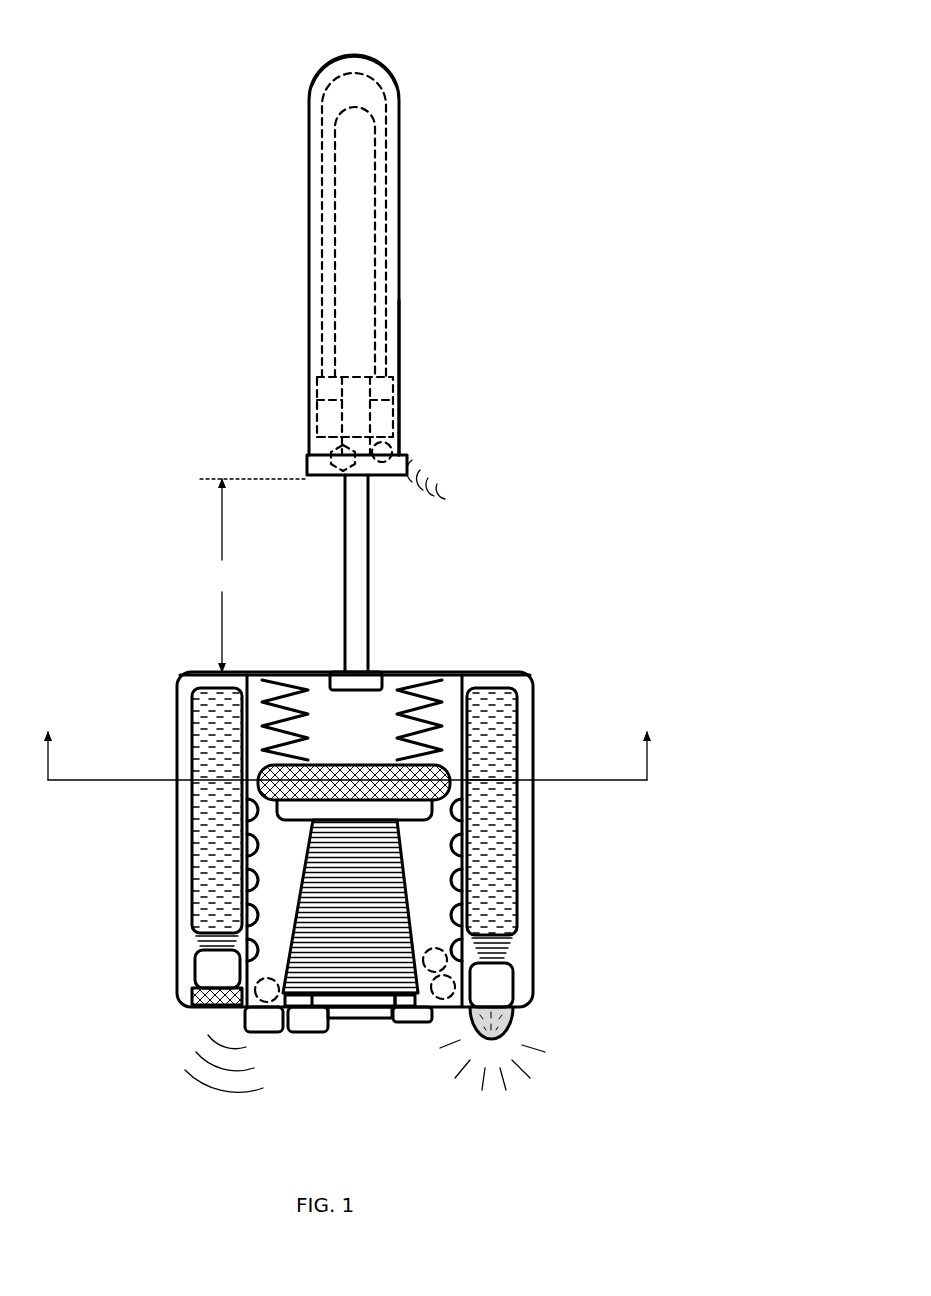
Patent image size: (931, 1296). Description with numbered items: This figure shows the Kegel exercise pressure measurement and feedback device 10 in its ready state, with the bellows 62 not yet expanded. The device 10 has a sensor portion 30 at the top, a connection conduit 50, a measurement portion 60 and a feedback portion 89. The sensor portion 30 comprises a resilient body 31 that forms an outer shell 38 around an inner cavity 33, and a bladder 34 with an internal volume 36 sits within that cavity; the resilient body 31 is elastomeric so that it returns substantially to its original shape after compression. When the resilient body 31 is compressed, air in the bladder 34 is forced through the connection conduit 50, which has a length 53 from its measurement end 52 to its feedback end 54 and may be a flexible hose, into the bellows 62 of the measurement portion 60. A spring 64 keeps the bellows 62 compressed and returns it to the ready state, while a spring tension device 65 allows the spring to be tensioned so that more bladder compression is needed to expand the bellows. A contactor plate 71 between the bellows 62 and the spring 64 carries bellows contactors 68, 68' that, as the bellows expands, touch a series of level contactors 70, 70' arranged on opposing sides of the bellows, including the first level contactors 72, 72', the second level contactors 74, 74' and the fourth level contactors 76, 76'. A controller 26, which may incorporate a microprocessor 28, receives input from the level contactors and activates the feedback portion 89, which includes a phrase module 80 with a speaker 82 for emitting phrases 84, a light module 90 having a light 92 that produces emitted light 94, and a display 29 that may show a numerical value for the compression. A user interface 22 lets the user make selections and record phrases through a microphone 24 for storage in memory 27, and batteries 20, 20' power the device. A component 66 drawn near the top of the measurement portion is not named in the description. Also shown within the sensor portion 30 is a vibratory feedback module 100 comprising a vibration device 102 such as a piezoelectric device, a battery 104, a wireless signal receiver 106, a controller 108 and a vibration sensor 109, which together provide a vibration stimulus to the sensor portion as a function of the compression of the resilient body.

The Kegel exercise pressure measurement and feedback device 10 is at (200, 179).
The battery 20 is at (170, 810).
The battery 20' is at (544, 811).
The user interface 22 is at (310, 1032).
The microphone 24 is at (415, 1022).
The controller 26 is at (266, 1032).
The memory 27 is at (433, 948).
The microprocessor 28 is at (266, 978).
The display 29 is at (398, 1020).
The sensor portion 30 is at (400, 115).
The resilient body 31 is at (400, 322).
The inner cavity 33 is at (400, 212).
The bladder 34 is at (345, 270).
The internal volume 36 is at (360, 225).
The outer shell 38 is at (382, 60).
The connection conduit 50 is at (355, 565).
The measurement end 52 is at (400, 476).
The length 53 is at (252, 575).
The feedback end 54 is at (372, 670).
The measurement portion 60 is at (520, 672).
The bellows 62 is at (318, 698).
The spring 64 is at (395, 870).
The spring tension device 65 is at (350, 1018).
The housing top 66 is at (332, 672).
The bellows contactor 68 is at (347, 756).
The bellows contactor 68' is at (537, 759).
The level contactors 70 is at (280, 804).
The level contactors 70' is at (548, 805).
The contactor plate 71 is at (344, 782).
The first level contactor 72 is at (278, 848).
The first level contactor 72' is at (545, 855).
The second level contactor 74 is at (279, 880).
The second level contactor 74' is at (545, 894).
The fourth level contactor 76 is at (285, 932).
The fourth level contactor 76' is at (543, 939).
The phrase module 80 is at (205, 978).
The speaker 82 is at (185, 1008).
The phrases 84 is at (208, 1050).
The feedback portion 89 is at (190, 1010).
The light module 90 is at (505, 990).
The light 92 is at (515, 1030).
The emitted light 94 is at (505, 1048).
The vibratory feedback module 100 is at (320, 380).
The vibration device 102 is at (320, 440).
The battery 104 is at (320, 402).
The wireless signal receiver 106 is at (390, 452).
The controller 108 is at (345, 472).
The vibration sensor 109 is at (388, 386).